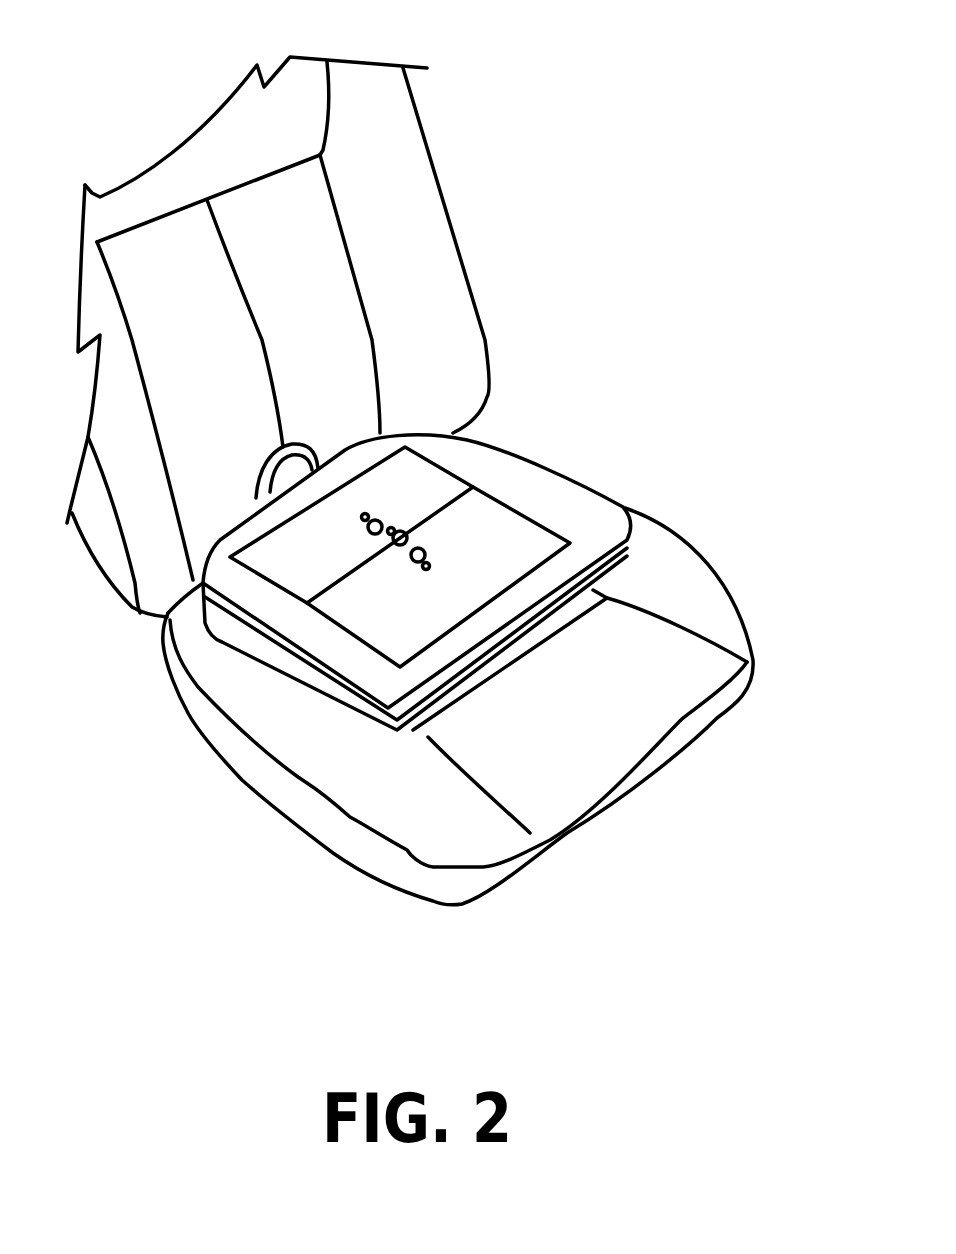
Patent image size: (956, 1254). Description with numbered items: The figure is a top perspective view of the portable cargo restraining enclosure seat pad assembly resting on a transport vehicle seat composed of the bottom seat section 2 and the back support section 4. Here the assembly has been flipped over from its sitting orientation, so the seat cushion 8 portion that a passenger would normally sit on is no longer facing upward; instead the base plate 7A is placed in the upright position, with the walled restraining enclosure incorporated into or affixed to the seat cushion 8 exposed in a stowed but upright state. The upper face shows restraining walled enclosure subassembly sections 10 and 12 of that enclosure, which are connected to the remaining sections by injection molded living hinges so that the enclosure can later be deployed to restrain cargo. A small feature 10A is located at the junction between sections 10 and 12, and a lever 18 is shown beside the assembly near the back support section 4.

The bottom seat section 2 is at (303, 748).
The back support section 4 is at (152, 550).
The base plate 7A is at (572, 507).
The seat cushion 8 is at (243, 640).
The restraining walled enclosure subassembly section 10 is at (490, 532).
The control switch 10A is at (396, 545).
The restraining walled enclosure subassembly section 12 is at (417, 493).
The release lever 18 is at (310, 447).